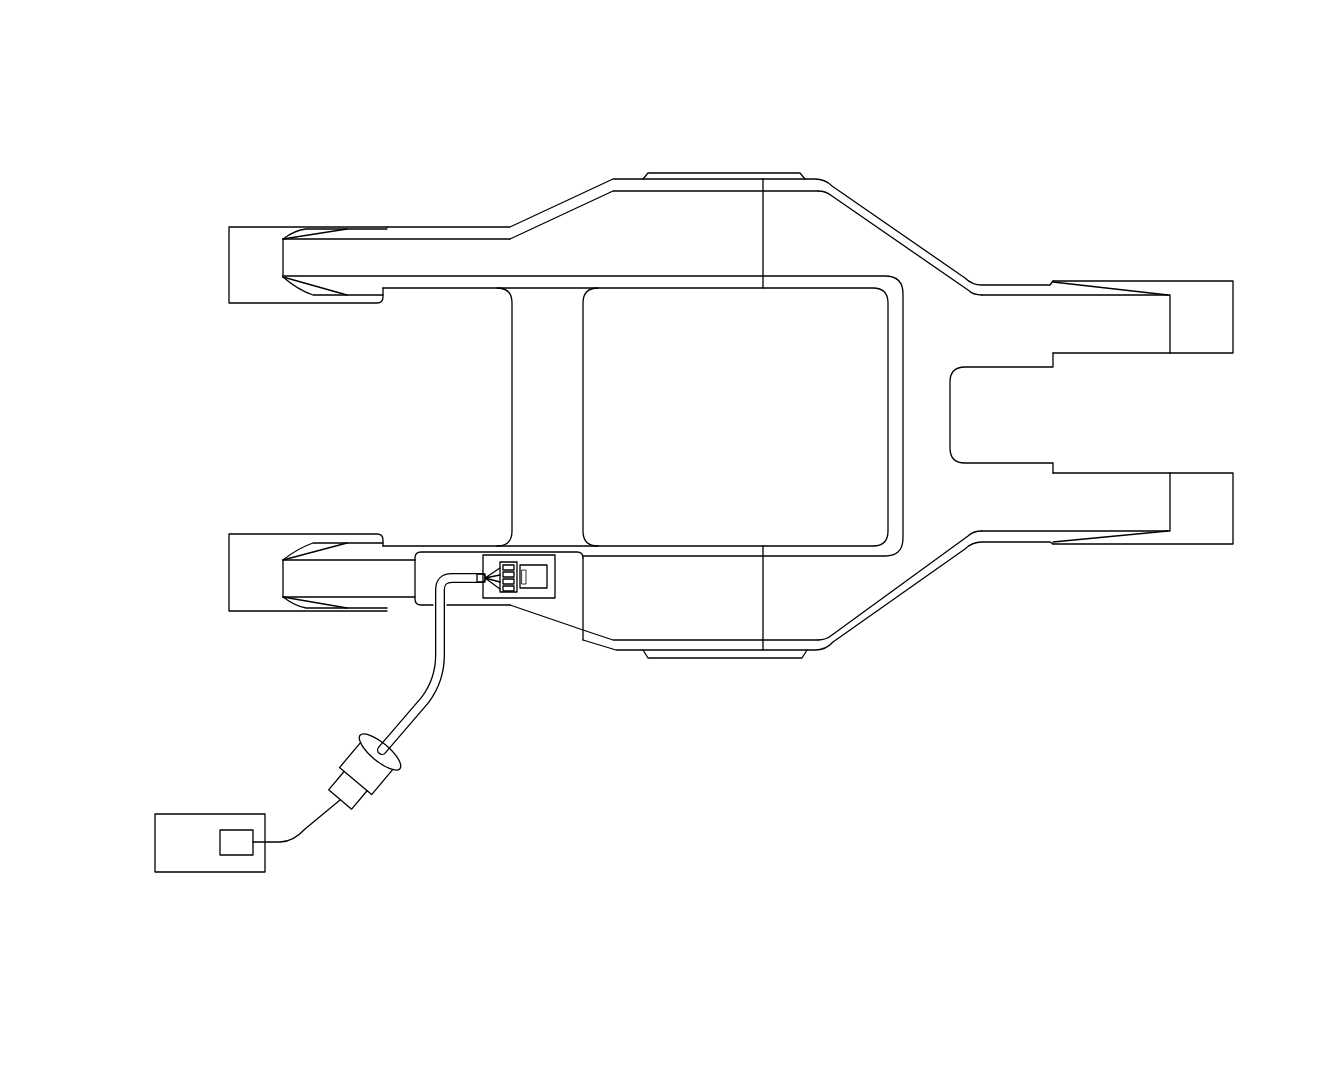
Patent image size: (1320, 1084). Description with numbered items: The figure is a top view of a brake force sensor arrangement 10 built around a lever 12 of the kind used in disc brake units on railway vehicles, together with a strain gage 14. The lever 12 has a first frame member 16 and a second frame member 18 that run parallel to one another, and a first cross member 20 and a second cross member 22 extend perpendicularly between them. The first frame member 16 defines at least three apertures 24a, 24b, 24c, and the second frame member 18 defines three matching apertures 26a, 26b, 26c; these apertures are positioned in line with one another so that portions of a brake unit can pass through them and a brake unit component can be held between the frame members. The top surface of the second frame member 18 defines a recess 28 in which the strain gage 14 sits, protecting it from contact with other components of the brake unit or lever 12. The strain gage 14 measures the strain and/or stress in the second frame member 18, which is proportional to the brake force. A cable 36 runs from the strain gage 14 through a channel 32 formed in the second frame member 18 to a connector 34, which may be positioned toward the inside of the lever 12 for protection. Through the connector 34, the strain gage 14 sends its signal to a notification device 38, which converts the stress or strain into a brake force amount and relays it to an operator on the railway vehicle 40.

The brake force sensor arrangement 10 is at (1118, 160).
The lever 12 is at (1020, 571).
The strain gage 14 is at (493, 567).
The first frame member 16 is at (845, 228).
The second frame member 18 is at (888, 567).
The first cross member 20 is at (532, 402).
The second cross member 22 is at (930, 413).
The aperture 24a is at (285, 239).
The aperture 24b is at (748, 173).
The aperture 24c is at (1183, 281).
The aperture 26a is at (275, 613).
The aperture 26b is at (758, 660).
The aperture 26c is at (1180, 545).
The recess 28 is at (568, 618).
The channel 32 is at (448, 606).
The connector 34 is at (352, 752).
The cable 36 is at (428, 704).
The notification device 38 is at (235, 830).
The railway vehicle 40 is at (242, 872).